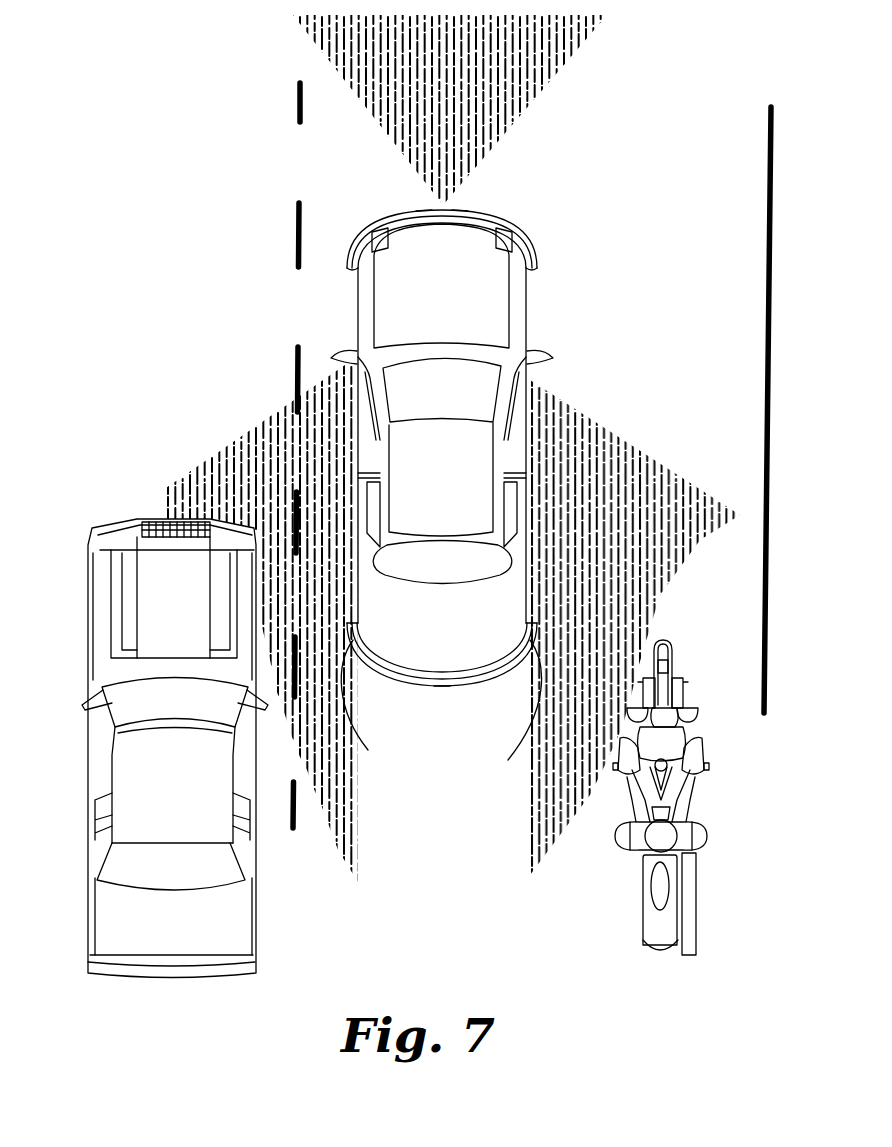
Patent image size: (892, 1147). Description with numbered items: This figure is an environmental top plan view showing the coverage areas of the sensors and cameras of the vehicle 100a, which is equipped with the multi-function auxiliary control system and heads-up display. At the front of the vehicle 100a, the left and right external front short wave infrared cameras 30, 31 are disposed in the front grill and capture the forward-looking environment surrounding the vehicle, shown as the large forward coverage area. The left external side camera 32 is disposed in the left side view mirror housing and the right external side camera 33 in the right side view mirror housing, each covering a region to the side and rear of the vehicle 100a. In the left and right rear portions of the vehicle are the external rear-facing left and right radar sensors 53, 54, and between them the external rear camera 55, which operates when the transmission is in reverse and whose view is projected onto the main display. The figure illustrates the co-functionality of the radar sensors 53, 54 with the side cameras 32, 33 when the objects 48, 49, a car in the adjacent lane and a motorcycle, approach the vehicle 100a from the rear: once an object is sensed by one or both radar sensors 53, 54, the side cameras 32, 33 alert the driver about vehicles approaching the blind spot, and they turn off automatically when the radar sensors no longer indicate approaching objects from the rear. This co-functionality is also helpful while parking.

The left external front short wave infrared camera 30 is at (424, 208).
The right external front short wave infrared camera 31 is at (462, 208).
The left external side camera 32 is at (345, 352).
The right external side camera 33 is at (540, 354).
The object 48 is at (183, 798).
The object 49 is at (708, 834).
The external rear-facing left radar sensor 53 is at (371, 709).
The external rear-facing right radar sensor 54 is at (506, 713).
The external rear camera 55 is at (437, 688).
The vehicle 100a is at (470, 491).